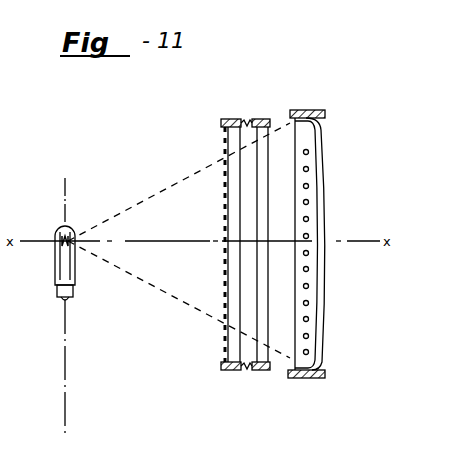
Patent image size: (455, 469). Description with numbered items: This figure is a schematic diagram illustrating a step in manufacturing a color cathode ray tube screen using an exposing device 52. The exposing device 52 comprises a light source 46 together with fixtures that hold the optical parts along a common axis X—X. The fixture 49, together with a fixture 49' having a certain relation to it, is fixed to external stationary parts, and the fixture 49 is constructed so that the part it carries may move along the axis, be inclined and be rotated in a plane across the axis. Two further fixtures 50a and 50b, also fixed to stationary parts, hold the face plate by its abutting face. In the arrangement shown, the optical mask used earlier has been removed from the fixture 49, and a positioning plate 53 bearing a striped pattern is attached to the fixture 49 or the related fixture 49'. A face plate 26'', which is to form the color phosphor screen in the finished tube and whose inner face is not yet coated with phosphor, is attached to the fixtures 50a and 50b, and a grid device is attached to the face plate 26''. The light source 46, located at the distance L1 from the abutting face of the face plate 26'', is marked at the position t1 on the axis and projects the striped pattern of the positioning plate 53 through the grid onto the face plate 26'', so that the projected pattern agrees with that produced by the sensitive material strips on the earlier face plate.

The light source 46 is at (72, 228).
The filament position t1 is at (56, 234).
The exposing device 52 is at (143, 186).
The fixture 49' is at (231, 228).
The fixture 49 is at (263, 228).
The positioning plate 53 is at (226, 370).
The face plate 26'' is at (327, 244).
The fixture 50a is at (312, 110).
The fixture 50b is at (315, 378).
The distance L1 is at (66, 417).